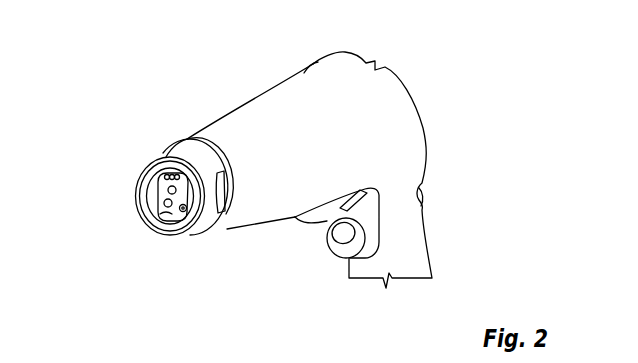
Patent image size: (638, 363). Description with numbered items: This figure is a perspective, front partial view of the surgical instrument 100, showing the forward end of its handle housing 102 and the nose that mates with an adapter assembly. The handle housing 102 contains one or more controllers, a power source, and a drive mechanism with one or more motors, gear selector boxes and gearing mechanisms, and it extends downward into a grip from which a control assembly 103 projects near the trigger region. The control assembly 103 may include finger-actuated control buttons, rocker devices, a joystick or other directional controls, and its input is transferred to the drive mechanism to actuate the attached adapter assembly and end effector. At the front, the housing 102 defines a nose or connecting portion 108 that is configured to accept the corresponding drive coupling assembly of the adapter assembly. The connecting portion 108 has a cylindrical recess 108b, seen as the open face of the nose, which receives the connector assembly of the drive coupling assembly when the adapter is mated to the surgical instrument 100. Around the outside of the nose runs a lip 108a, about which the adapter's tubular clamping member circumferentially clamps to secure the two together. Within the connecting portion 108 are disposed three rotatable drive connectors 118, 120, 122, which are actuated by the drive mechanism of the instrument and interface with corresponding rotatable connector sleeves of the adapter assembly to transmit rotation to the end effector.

The surgical instrument 100 is at (285, 79).
The handle housing 102 is at (427, 252).
The control assembly 103 is at (323, 252).
The connecting portion 108 is at (176, 158).
The lip 108a is at (223, 232).
The cylindrical recess 108b is at (167, 210).
The rotatable drive connector 118 is at (163, 203).
The rotatable drive connector 120 is at (183, 204).
The rotatable drive connector 122 is at (177, 205).